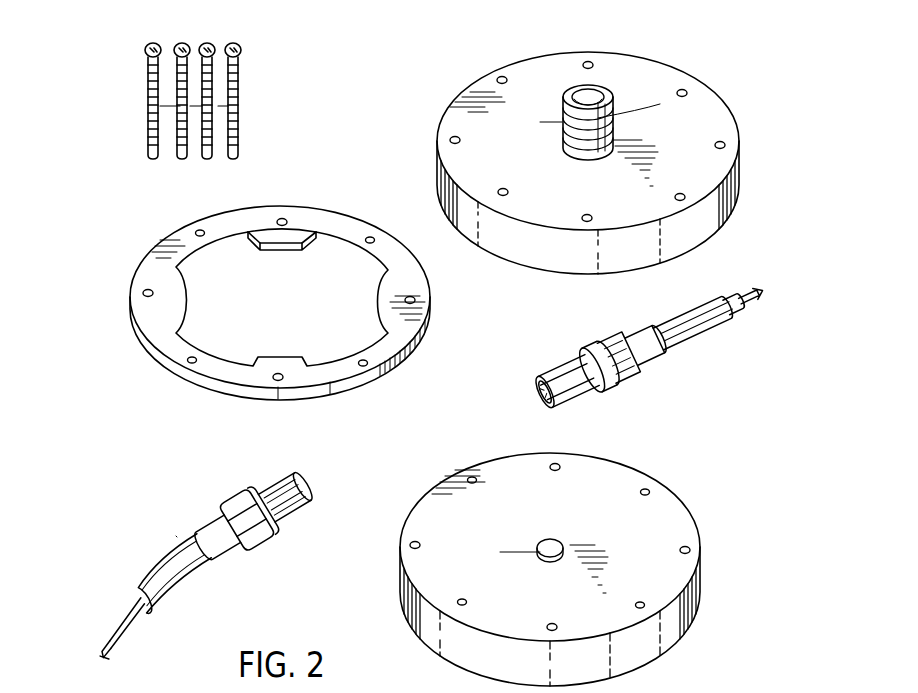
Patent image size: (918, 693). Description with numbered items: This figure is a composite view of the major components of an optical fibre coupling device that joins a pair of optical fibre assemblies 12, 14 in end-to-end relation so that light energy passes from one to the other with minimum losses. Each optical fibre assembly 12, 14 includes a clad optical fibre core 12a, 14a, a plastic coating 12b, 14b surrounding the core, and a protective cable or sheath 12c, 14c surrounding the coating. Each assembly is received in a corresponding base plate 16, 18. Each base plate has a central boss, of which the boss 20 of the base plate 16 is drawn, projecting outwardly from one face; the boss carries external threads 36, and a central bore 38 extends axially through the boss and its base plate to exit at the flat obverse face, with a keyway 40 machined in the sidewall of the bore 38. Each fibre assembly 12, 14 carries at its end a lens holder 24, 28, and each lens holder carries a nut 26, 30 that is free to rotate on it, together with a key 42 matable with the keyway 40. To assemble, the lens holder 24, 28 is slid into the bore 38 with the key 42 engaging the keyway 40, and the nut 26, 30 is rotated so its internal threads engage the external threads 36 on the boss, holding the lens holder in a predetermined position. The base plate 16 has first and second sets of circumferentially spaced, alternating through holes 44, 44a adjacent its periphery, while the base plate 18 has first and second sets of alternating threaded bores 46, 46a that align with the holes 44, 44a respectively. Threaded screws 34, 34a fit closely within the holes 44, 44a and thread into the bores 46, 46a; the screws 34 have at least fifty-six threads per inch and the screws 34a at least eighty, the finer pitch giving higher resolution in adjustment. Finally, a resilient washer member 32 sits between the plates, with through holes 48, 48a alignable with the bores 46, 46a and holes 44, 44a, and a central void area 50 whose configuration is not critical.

The optical fibre assembly 12 is at (681, 293).
The clad optical fibre core 12a is at (751, 297).
The plastic coating 12b is at (711, 316).
The protective cable or sheath 12c is at (682, 333).
The optical fibre assembly 14 is at (175, 537).
The clad optical fibre core 14a is at (115, 645).
The plastic coating 14b is at (123, 605).
The protective cable or sheath 14c is at (150, 565).
The base plate 16 is at (533, 72).
The base plate 18 is at (640, 501).
The central boss 20 is at (592, 92).
The lens holder 24 is at (630, 334).
The nut 26 is at (586, 337).
The lens holder 28 is at (215, 520).
The nut 30 is at (240, 490).
The resilient washer member 32 is at (363, 230).
The threaded screws 34 is at (155, 103).
The threaded screws 34a is at (230, 106).
The external threads 36 is at (600, 118).
The central bore 38 is at (599, 100).
The keyway 40 is at (540, 122).
The key 42 is at (550, 373).
The through holes 44 is at (586, 62).
The through holes 44a is at (687, 93).
The threaded bores 46 is at (410, 545).
The threaded bores 46a is at (473, 477).
The through holes 48 is at (282, 218).
The through holes 48a is at (200, 229).
The central void area 50 is at (295, 310).